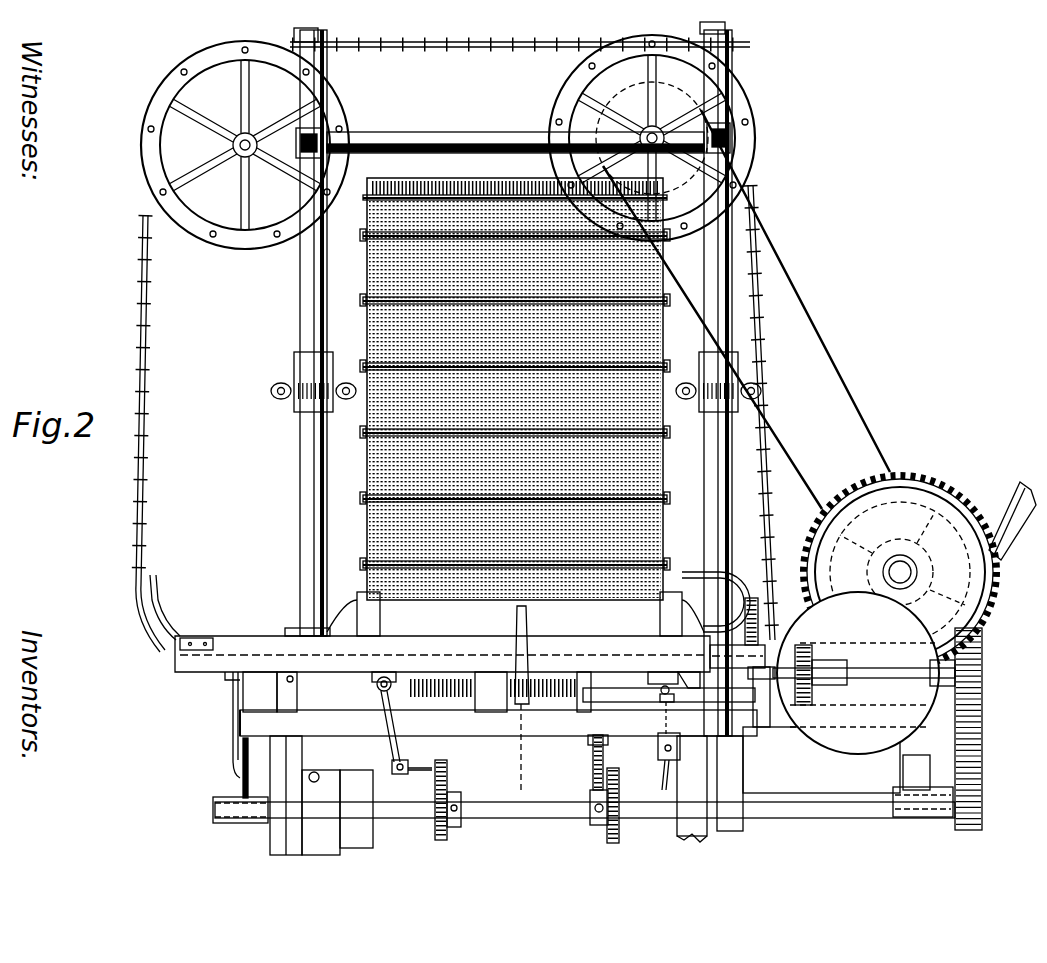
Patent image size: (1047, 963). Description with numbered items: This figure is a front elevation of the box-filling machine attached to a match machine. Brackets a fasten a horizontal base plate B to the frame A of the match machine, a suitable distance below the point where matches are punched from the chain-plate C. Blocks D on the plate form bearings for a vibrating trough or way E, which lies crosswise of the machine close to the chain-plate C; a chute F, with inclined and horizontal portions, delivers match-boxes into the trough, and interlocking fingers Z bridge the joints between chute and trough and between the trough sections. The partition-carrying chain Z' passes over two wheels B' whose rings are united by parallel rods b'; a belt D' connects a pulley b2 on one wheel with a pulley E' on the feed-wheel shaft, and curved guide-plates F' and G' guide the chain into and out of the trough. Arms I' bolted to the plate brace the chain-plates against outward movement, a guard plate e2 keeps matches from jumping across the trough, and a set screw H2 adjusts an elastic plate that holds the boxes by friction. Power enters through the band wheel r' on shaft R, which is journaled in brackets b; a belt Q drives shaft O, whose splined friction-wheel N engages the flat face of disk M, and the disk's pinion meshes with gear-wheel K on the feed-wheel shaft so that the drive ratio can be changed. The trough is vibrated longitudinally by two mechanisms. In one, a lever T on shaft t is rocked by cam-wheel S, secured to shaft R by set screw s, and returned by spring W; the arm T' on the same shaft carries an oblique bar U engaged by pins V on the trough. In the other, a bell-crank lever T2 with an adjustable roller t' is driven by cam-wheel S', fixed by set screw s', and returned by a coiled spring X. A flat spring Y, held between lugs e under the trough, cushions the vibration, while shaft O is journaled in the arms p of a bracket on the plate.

The chain Z' is at (462, 347).
The wheel B' is at (448, 154).
The parallel rod b' is at (473, 152).
The pulley b2 is at (632, 108).
The belt D' is at (746, 309).
The gear-wheel K is at (900, 565).
The pulley E' is at (900, 572).
The chute F is at (1012, 526).
The curved guide-plate F' is at (717, 588).
The chain-plate C is at (372, 538).
The guide-plate G' is at (165, 607).
The guard plate e2 is at (300, 643).
The interlocking finger Z is at (442, 650).
The lug e is at (232, 678).
The vibrating trough E is at (470, 656).
The block D is at (375, 692).
The set screw H2 is at (592, 713).
The coiled spring X is at (432, 700).
The bell-crank lever T2 is at (422, 766).
The roller t' is at (412, 785).
The bracing arm I' is at (507, 702).
The pin V is at (648, 678).
The bar U is at (690, 678).
The arm T' is at (685, 714).
The frame A is at (498, 715).
The base plate B is at (268, 723).
The flat spring Y is at (238, 743).
The bracket a is at (306, 770).
The band wheel r' is at (304, 817).
The shaft R is at (585, 821).
The bracket b is at (572, 821).
The cam-wheel S' is at (455, 806).
The set screw s' is at (476, 797).
The spring W is at (594, 765).
The cam-wheel S is at (623, 806).
The set screw s is at (581, 817).
The lever T is at (646, 761).
The shaft t is at (660, 779).
The disk M is at (862, 755).
The shaft O is at (887, 680).
The friction-wheel N is at (808, 706).
The bracket arm p is at (768, 722).
The belt Q is at (975, 720).